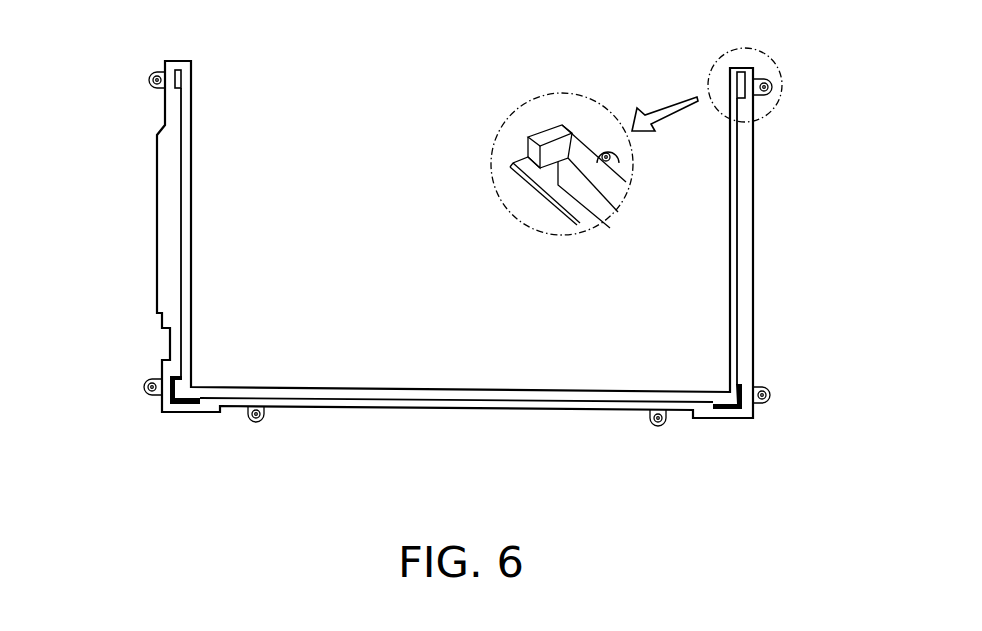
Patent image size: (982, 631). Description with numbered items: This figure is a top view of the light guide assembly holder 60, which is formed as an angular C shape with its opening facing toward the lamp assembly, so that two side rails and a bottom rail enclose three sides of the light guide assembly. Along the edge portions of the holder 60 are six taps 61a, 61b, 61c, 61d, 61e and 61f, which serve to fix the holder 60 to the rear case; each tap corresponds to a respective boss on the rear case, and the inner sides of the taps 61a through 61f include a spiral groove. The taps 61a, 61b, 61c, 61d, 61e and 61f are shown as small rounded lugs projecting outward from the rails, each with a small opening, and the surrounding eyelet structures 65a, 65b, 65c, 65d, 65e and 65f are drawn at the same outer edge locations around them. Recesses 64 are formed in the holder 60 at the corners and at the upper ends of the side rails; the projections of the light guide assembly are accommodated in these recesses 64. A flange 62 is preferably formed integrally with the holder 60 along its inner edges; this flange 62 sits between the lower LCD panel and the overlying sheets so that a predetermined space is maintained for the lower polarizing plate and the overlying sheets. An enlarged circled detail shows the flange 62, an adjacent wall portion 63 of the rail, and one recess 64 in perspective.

The light guide assembly holder 60 is at (348, 138).
The tap 61a is at (770, 87).
The tap 61b is at (768, 394).
The tap 61c is at (658, 425).
The tap 61d is at (256, 421).
The tap 61e is at (146, 387).
The tap 61f is at (152, 80).
The flange 62 is at (522, 157).
The side wall 63 is at (615, 187).
The recess 64 is at (179, 80).
The mounting tab 65a is at (768, 83).
The mounting tab 65b is at (765, 390).
The mounting tab 65c is at (650, 416).
The mounting tab 65d is at (263, 413).
The mounting tab 65e is at (150, 381).
The mounting tab 65f is at (150, 73).